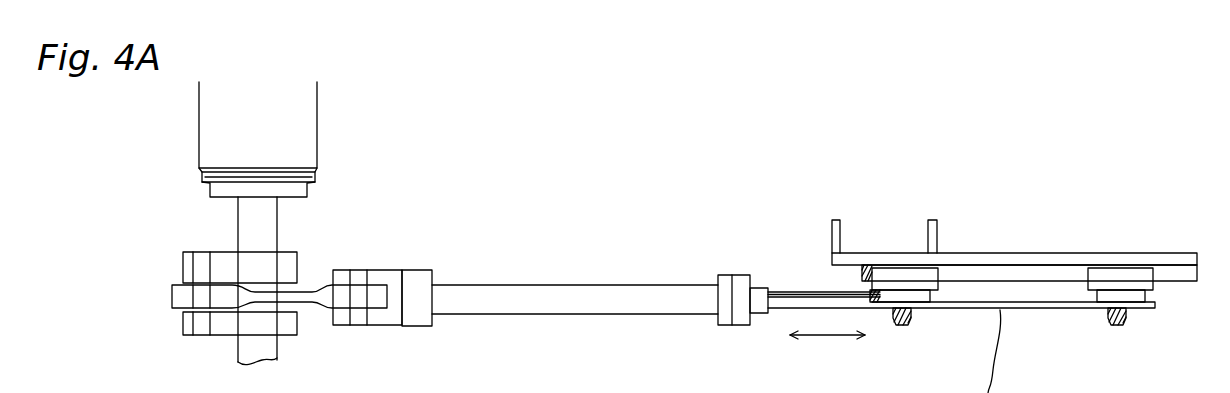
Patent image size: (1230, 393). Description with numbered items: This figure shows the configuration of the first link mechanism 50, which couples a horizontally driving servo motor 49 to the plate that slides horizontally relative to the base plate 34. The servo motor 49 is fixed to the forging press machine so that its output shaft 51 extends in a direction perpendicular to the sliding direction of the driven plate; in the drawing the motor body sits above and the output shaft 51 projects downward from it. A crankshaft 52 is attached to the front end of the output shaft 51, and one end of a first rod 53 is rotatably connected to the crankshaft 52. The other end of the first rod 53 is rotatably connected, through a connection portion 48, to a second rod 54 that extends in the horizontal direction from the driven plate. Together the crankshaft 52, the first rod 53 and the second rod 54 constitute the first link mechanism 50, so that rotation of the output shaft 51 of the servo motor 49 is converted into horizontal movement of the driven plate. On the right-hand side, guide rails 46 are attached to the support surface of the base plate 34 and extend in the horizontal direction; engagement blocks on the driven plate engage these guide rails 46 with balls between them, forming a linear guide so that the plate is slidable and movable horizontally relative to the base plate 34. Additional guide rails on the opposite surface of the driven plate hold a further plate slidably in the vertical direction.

The base plate 34 is at (1022, 252).
The guide rails 46 is at (968, 267).
The connection portion 48 is at (733, 275).
The horizontally driving servo motor 49 is at (298, 105).
The first link mechanism 50 is at (555, 247).
The output shaft 51 is at (260, 212).
The crankshaft 52 is at (213, 258).
The first rod 53 is at (320, 309).
The second rod 54 is at (470, 293).